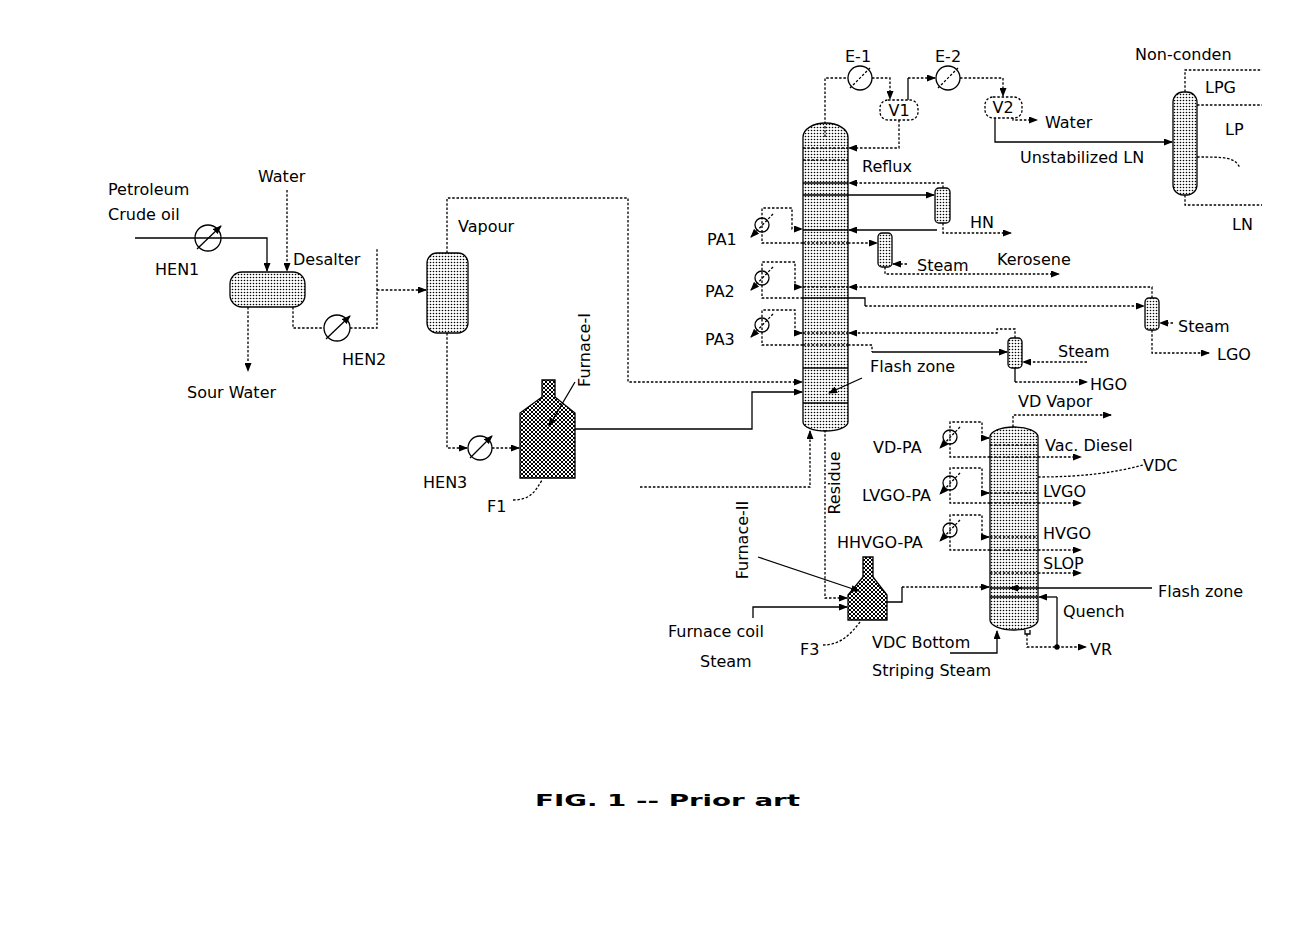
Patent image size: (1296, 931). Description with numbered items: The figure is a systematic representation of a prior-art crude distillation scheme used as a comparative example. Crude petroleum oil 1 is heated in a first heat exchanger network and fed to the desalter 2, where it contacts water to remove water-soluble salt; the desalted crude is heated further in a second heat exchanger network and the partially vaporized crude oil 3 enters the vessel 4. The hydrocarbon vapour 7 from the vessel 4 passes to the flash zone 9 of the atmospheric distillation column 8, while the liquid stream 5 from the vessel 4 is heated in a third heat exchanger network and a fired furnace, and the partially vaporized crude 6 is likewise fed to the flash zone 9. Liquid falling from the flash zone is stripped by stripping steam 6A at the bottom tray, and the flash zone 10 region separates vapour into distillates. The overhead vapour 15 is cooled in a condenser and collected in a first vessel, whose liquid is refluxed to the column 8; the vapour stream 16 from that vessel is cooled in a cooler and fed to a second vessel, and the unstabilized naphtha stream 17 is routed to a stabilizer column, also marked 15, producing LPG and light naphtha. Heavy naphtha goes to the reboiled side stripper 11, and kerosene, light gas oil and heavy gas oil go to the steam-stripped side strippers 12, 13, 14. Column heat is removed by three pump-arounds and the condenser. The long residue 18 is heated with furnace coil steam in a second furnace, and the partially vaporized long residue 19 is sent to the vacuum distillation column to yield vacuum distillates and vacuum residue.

The crude petroleum oil 1 is at (150, 241).
The desalter 2 is at (228, 290).
The partially vaporized crude oil 3 is at (359, 284).
The vessel 4 is at (480, 318).
The liquid stream 5 is at (447, 379).
The partially vaporized crude 6 is at (740, 433).
The stripping steam 6A is at (687, 490).
The hydrocarbon vapour 7 is at (500, 197).
The atmospheric distillation column 8 is at (803, 163).
The flash zone 9 is at (800, 367).
The flash zone 10 is at (803, 415).
The side stripper 11 is at (951, 195).
The side stripper 12 is at (893, 240).
The side stripper 13 is at (1160, 310).
The side stripper 14 is at (1023, 352).
The overhead vapour 15 is at (825, 93).
The vapour stream 16 is at (917, 77).
The unstabilized naphtha stream 17 is at (1028, 137).
The long residue 18 is at (825, 550).
The partially vaporized long residue 19 is at (937, 582).